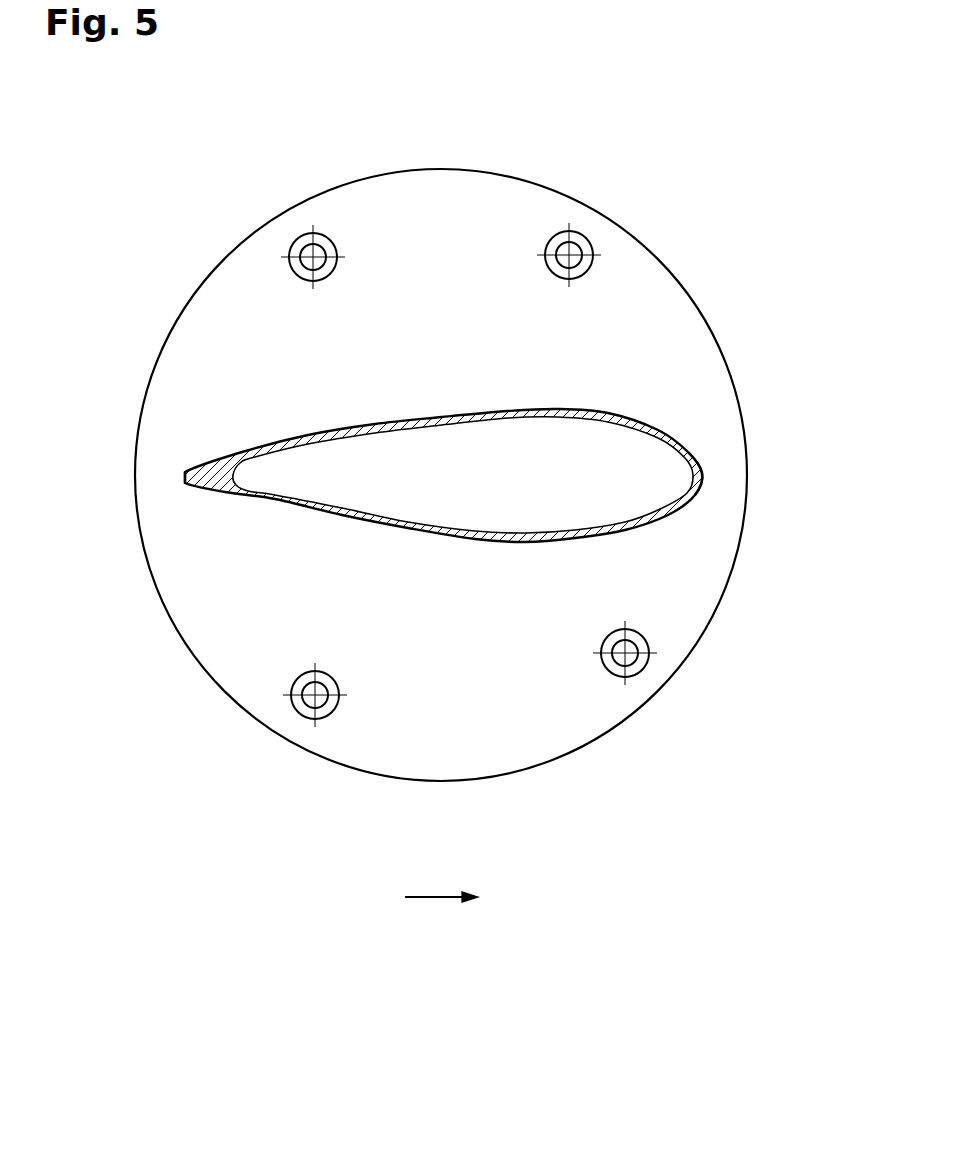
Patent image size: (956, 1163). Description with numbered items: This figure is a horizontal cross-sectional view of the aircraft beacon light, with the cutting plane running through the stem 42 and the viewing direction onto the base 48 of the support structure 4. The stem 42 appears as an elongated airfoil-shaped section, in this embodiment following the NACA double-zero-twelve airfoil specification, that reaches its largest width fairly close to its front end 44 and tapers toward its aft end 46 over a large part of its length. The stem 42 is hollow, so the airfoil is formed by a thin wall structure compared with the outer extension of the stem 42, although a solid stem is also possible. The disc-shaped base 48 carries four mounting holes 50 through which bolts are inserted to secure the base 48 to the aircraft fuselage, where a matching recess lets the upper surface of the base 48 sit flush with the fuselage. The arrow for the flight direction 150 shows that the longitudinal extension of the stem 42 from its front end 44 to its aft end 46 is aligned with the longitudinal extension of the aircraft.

The support structure 4 is at (753, 383).
The stem 42 is at (463, 537).
The front end 44 is at (703, 473).
The aft end 46 is at (183, 477).
The base 48 is at (460, 353).
The mounting holes 50 is at (308, 236).
The flight direction 150 is at (437, 897).